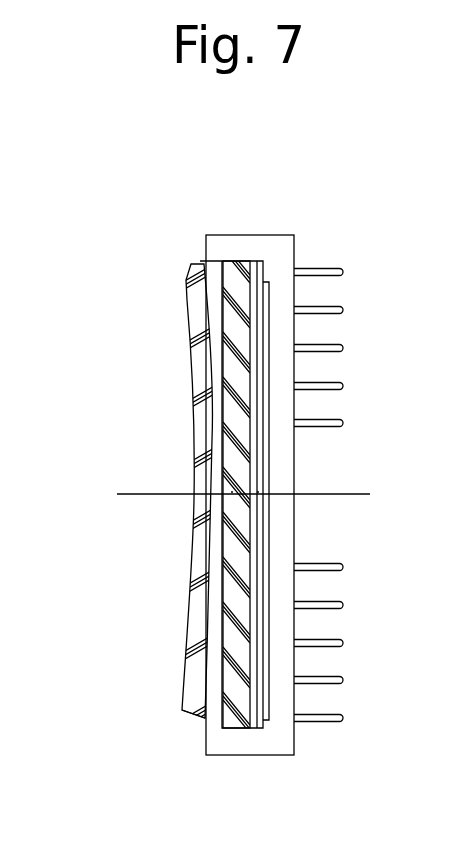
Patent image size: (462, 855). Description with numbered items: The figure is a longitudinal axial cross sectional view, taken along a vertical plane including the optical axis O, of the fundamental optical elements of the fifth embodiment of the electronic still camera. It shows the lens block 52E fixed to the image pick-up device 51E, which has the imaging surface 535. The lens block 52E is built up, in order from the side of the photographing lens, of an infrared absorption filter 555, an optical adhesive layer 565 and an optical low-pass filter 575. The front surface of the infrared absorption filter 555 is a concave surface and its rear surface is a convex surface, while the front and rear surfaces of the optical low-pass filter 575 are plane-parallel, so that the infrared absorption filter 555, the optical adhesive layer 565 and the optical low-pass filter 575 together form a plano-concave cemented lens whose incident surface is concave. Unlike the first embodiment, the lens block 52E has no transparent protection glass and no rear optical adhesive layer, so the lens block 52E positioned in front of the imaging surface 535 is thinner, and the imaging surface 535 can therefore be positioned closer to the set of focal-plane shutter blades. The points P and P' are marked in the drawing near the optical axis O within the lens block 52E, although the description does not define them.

The image pick-up device 51E is at (281, 253).
The lens block 52E is at (250, 179).
The infrared absorption filter 555 is at (193, 262).
The optical low-pass filter 575 is at (240, 262).
The imaging surface 535 is at (263, 418).
The optical adhesive layer 565 is at (206, 722).
The light emission point P is at (318, 426).
The reflected light point P' is at (342, 466).
The optical axis O is at (258, 494).